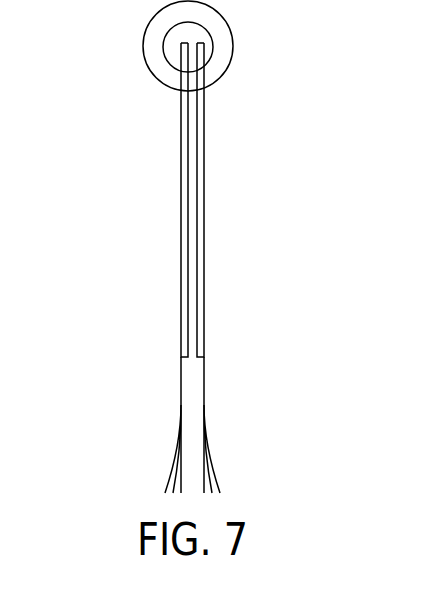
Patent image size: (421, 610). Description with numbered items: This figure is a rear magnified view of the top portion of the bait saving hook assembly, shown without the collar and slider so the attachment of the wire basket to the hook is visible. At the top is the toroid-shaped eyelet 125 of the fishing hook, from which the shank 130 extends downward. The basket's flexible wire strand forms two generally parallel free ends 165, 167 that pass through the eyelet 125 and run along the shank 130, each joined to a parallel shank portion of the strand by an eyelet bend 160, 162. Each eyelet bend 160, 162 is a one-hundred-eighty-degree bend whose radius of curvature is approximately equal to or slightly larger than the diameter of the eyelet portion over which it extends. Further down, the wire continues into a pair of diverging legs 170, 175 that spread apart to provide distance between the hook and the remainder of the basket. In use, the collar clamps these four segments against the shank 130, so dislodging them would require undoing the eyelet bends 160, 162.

The eyelet 125 is at (197, 15).
The eyelet bend 160 is at (163, 45).
The eyelet bend 162 is at (213, 47).
The free end 165 is at (181, 178).
The free end 167 is at (203, 205).
The shank 130 is at (202, 390).
The diverging leg 170 is at (168, 457).
The diverging leg 175 is at (213, 455).